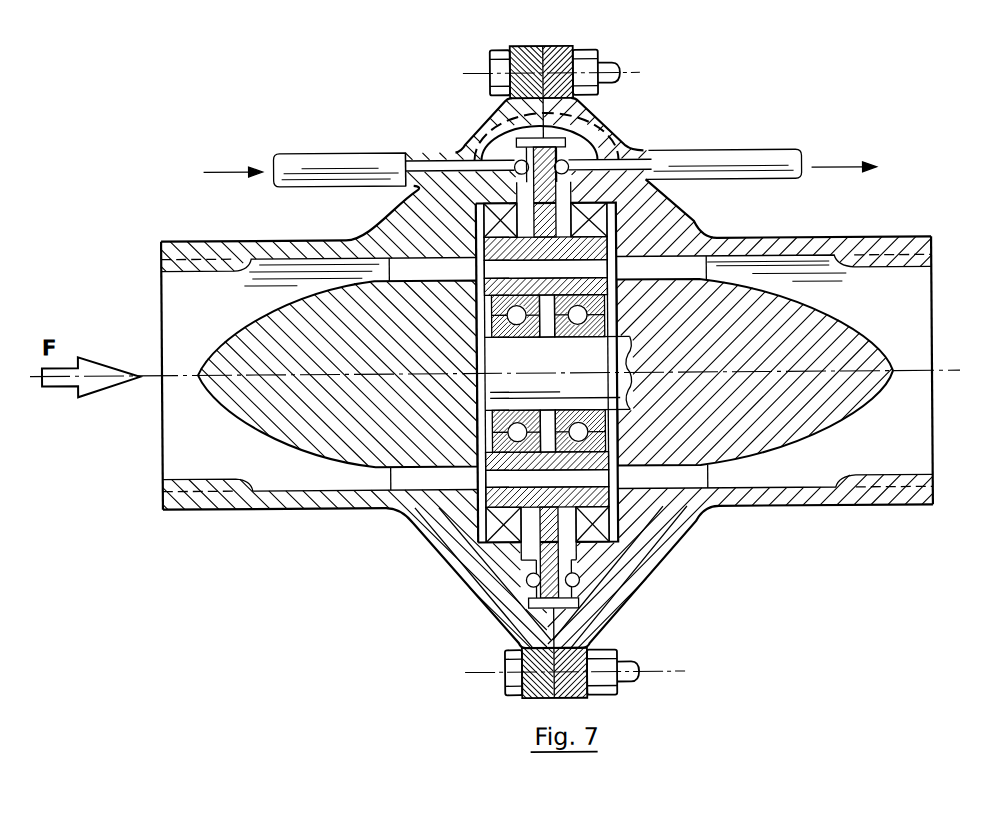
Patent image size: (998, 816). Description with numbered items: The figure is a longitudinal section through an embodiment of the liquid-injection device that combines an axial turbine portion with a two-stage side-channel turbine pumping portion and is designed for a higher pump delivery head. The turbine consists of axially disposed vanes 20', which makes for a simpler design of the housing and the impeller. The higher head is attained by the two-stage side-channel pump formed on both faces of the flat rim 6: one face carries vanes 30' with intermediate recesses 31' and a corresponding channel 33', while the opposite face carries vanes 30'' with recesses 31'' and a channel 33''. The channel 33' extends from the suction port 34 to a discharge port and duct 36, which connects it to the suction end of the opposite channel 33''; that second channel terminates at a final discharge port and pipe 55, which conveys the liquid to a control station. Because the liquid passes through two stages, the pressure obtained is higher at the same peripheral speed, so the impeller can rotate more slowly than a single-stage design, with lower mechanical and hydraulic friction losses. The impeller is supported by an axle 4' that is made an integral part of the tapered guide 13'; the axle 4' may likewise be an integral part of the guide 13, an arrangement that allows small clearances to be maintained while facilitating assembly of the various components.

The axle 4' is at (612, 376).
The rim 6 is at (543, 217).
The guide 13 is at (337, 443).
The tapered guide 13' is at (755, 439).
The axially disposed vanes 20' is at (621, 355).
The vanes 30' is at (463, 274).
The intermediate recesses 31' is at (496, 139).
The vanes 30'' is at (618, 270).
The recesses 31'' is at (646, 131).
The channel 33' is at (490, 598).
The channel 33'' is at (652, 374).
The suction port 34 is at (458, 168).
The discharge port and duct 36 is at (580, 133).
The discharge pipe 55 is at (693, 160).